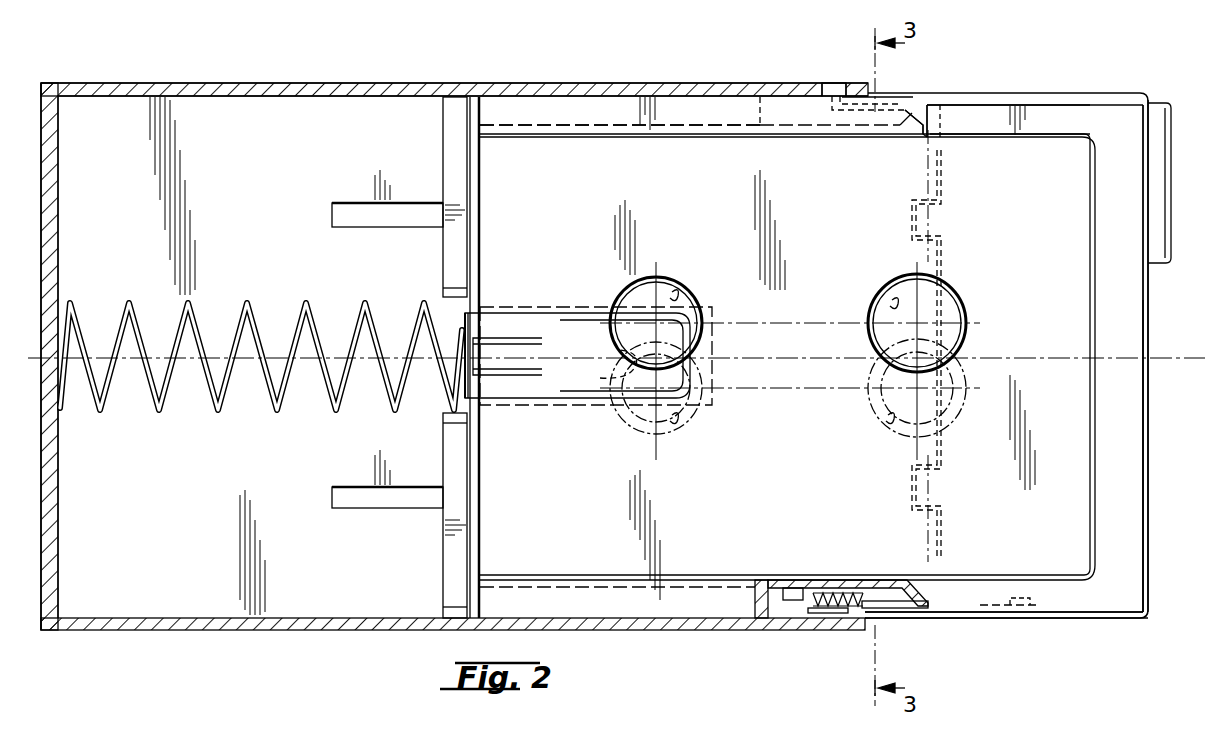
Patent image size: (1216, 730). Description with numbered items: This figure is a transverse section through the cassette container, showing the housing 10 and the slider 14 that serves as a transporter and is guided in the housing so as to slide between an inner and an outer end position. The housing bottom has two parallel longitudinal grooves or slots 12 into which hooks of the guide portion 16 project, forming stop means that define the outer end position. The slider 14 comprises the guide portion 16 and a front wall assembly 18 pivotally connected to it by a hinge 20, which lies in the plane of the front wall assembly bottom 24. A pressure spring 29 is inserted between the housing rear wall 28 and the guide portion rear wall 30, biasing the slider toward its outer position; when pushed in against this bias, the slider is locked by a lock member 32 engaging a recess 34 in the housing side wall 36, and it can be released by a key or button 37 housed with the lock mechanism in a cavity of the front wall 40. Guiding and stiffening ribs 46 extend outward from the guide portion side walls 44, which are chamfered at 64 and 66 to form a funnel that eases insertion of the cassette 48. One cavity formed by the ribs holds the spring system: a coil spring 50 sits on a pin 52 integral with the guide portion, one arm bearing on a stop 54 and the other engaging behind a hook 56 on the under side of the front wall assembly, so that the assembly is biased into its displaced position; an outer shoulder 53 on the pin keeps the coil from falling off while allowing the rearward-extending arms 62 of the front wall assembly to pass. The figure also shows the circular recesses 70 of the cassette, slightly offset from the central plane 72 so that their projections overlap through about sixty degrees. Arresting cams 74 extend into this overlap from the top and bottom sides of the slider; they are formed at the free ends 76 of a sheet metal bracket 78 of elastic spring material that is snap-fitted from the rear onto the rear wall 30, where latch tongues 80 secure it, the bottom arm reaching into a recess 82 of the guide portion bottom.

The housing 10 is at (238, 80).
The longitudinal grooves or slots 12 is at (345, 205).
The slider 14 is at (1050, 78).
The guide portion 16 is at (440, 247).
The front wall assembly 18 is at (1090, 622).
The hinge 20 is at (942, 492).
The front wall assembly bottom 24 is at (995, 120).
The housing rear wall 28 is at (58, 540).
The pressure spring 29 is at (222, 412).
The guide portion rear wall 30 is at (478, 478).
The lock member 32 is at (1122, 92).
The recess 34 is at (835, 90).
The housing side wall 36 is at (700, 82).
The key or button 37 is at (1160, 207).
The front wall 40 is at (1140, 545).
The guide portion side walls 44 is at (613, 134).
The guiding and stiffening ribs 46 is at (548, 124).
The cassette 48 is at (946, 128).
The spring 50 is at (848, 600).
The pin 52 is at (828, 595).
The outer shoulder 53 is at (822, 614).
The stop 54 is at (790, 590).
The hook 56 is at (1020, 598).
The arms 62 is at (860, 112).
The chamfer 64 is at (672, 114).
The chamfer 66 is at (922, 127).
The circular depressions or recesses 70 is at (686, 290).
The central plane 72 is at (792, 356).
The arresting cams 74 is at (608, 368).
The free ends of bracket arms 76 is at (557, 392).
The sheet metal bracket 78 is at (570, 308).
The latch tongues 80 is at (500, 335).
The recess 82 is at (523, 400).